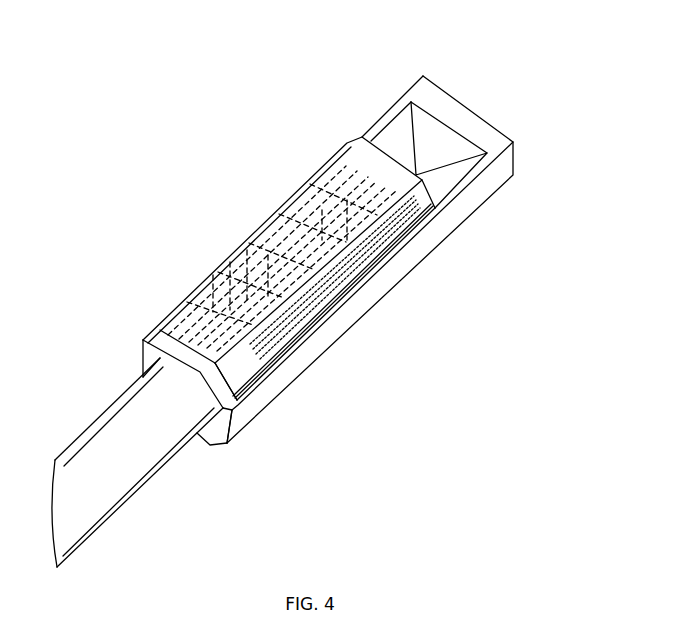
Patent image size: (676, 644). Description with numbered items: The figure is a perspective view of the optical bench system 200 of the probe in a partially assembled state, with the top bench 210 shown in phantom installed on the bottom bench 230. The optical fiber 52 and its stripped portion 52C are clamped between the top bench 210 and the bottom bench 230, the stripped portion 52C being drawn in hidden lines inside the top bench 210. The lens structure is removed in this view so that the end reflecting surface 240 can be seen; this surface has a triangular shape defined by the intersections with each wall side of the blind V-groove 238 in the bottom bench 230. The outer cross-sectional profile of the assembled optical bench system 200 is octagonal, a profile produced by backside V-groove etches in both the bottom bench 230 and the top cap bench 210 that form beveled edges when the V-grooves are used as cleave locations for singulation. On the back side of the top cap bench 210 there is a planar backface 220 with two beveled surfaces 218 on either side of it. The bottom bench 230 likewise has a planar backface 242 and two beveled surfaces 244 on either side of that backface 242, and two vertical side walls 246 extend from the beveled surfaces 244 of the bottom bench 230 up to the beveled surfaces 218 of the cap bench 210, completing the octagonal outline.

The optical bench system 200 is at (492, 52).
The top bench 210 is at (273, 211).
The beveled surfaces 218 is at (155, 325).
The planar backface 220 is at (233, 380).
The bottom bench 230 is at (329, 349).
The blind V-groove 238 is at (393, 133).
The end reflecting surface 240 is at (432, 138).
The planar backface 242 is at (202, 443).
The beveled surfaces 244 is at (140, 378).
The vertical side walls 246 is at (140, 356).
The optical fiber 52 is at (103, 437).
The stripped portion 52C is at (248, 231).